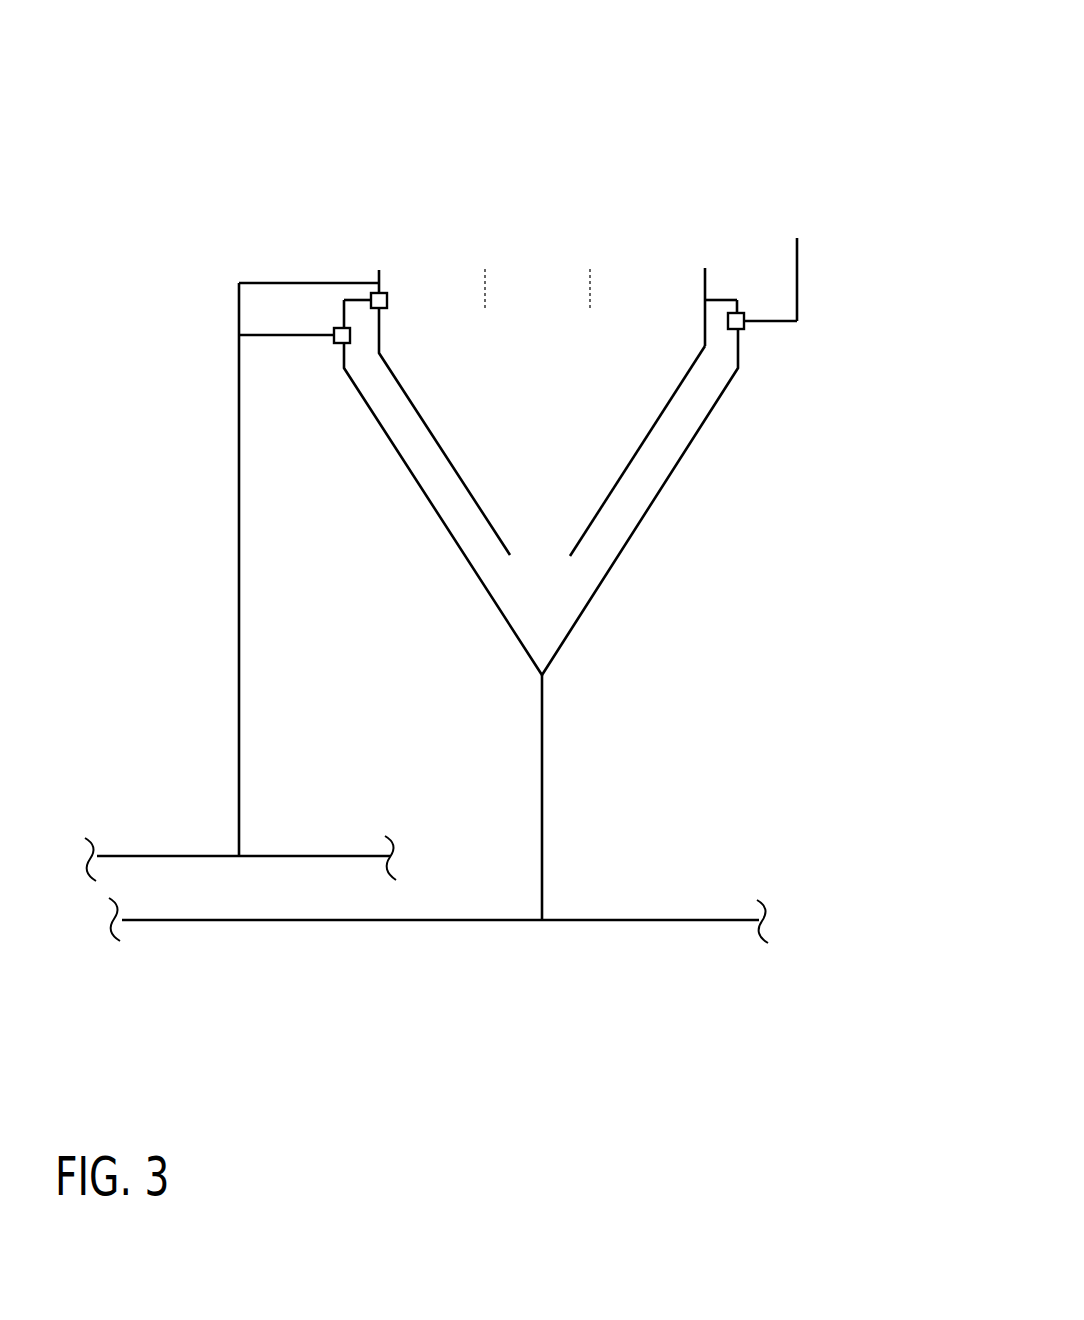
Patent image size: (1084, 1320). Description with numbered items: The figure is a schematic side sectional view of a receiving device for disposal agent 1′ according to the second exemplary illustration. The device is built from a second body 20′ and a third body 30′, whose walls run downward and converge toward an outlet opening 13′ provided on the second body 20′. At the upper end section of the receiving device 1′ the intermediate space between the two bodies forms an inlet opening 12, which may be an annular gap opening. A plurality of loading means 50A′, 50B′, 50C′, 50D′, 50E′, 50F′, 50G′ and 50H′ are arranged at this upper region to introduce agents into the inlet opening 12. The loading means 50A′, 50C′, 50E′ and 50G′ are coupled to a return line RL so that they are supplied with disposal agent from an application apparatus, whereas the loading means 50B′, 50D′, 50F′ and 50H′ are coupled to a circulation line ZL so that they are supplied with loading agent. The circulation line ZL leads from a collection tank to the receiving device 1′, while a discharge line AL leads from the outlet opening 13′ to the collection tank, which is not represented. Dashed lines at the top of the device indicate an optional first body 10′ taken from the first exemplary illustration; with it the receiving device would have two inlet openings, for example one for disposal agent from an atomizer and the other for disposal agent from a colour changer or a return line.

The receiving device for disposal agent 1′ is at (318, 145).
The first body 10′ is at (563, 260).
The inlet opening 12 is at (712, 306).
The outlet opening 13′ is at (547, 675).
The second body 20′ is at (363, 414).
The third body 30′ is at (445, 480).
The loading means 50A′ is at (835, 385).
The loading means 50B′ is at (303, 267).
The loading means 50C′ is at (835, 385).
The loading means 50D′ is at (303, 267).
The loading means 50E′ is at (835, 385).
The loading means 50F′ is at (303, 267).
The loading means 50G′ is at (745, 327).
The loading means 50H′ is at (332, 318).
The return line RL is at (796, 279).
The circulation line ZL is at (240, 582).
The discharge line AL is at (438, 909).